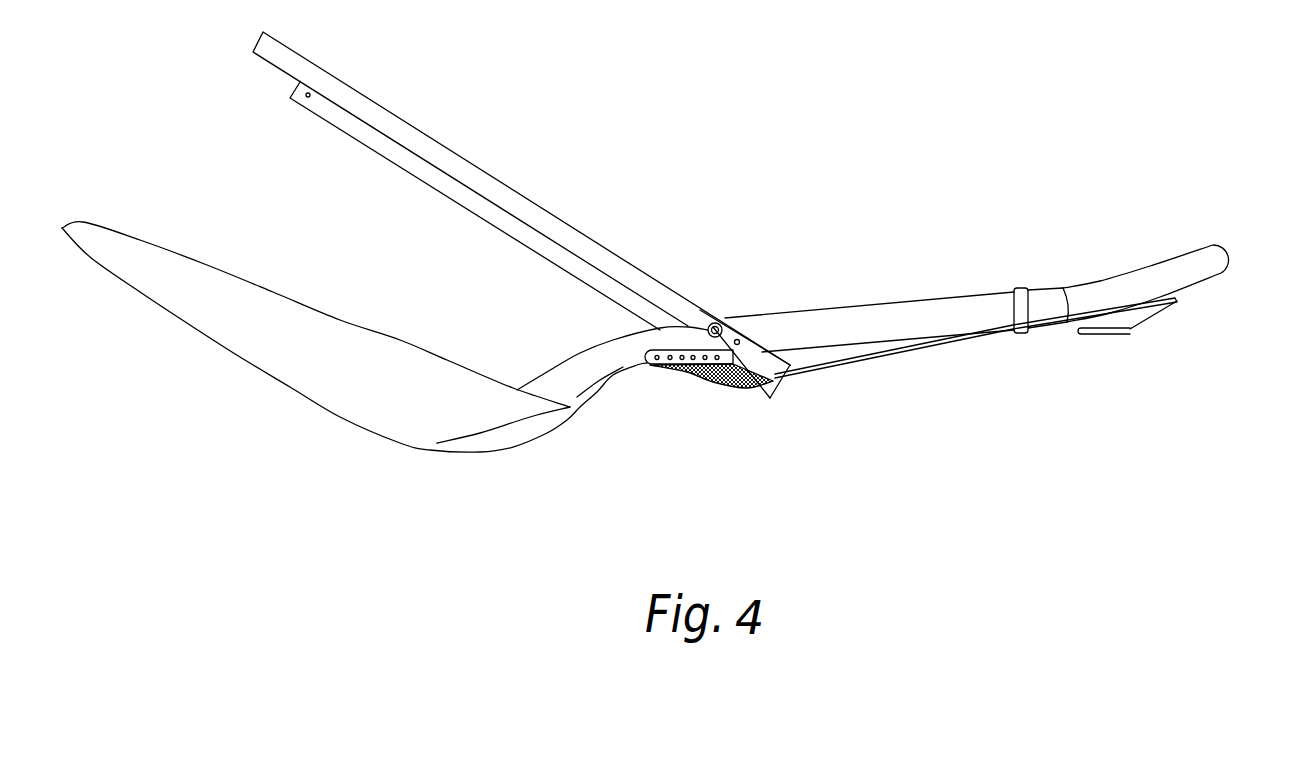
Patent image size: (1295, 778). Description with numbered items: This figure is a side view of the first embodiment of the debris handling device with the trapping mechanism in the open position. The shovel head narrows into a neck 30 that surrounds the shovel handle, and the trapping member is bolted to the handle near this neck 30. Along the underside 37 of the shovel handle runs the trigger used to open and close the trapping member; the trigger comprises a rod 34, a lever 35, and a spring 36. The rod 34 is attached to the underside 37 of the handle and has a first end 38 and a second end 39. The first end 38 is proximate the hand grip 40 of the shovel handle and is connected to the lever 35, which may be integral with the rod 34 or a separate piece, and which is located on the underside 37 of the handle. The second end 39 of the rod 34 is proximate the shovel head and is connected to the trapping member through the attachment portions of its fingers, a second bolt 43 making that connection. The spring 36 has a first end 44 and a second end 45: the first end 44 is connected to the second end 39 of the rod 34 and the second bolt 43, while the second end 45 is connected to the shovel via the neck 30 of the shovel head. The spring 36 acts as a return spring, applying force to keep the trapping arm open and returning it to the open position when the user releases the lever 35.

The neck 30 is at (607, 363).
The rod 34 is at (878, 357).
The lever 35 is at (1132, 314).
The spring 36 is at (710, 378).
The underside of the shovel handle 37 is at (918, 334).
The first end of the rod 38 is at (1173, 307).
The second end of the rod 39 is at (769, 392).
The hand grip 40 is at (1196, 245).
The second bolt 43 is at (781, 380).
The first end of the spring 44 is at (757, 373).
The second end of the spring 45 is at (647, 366).